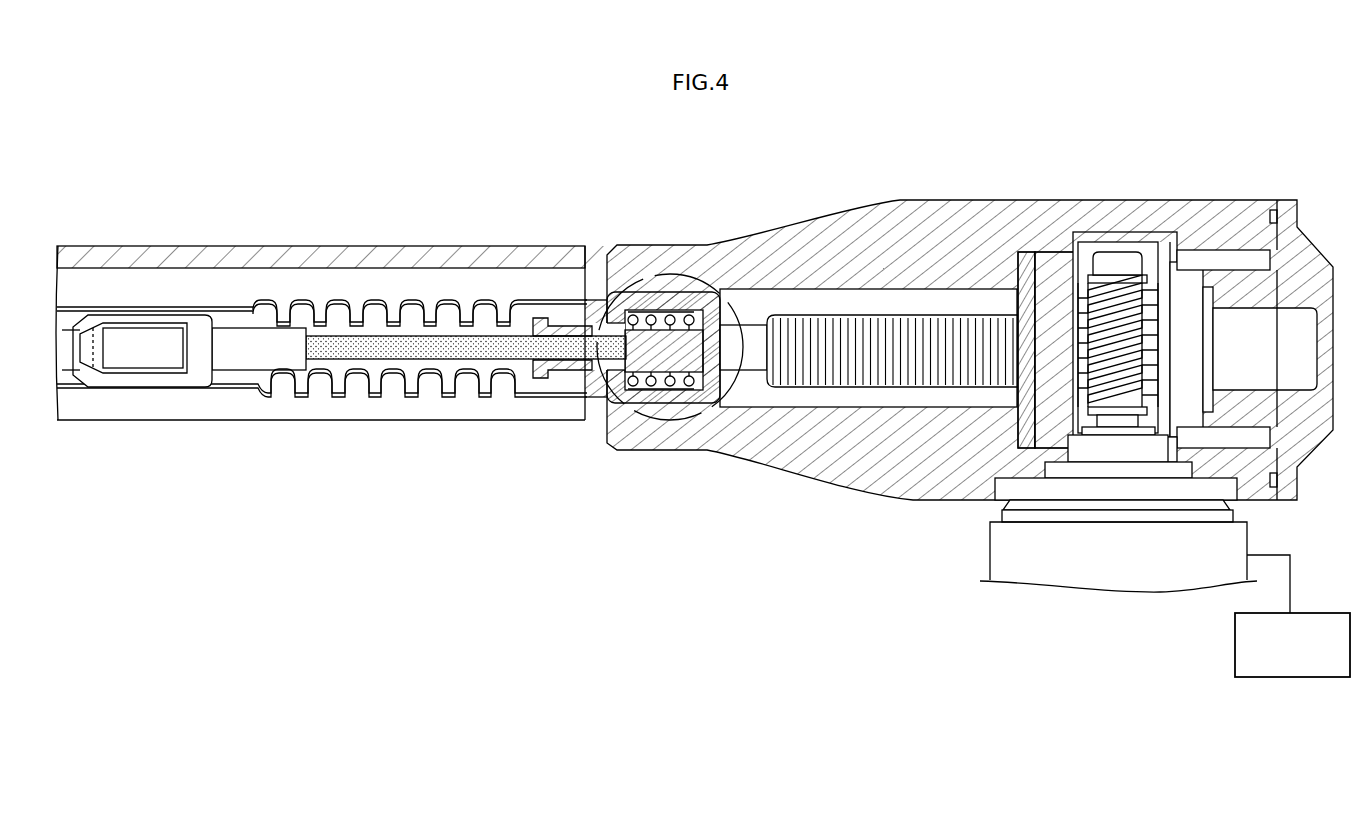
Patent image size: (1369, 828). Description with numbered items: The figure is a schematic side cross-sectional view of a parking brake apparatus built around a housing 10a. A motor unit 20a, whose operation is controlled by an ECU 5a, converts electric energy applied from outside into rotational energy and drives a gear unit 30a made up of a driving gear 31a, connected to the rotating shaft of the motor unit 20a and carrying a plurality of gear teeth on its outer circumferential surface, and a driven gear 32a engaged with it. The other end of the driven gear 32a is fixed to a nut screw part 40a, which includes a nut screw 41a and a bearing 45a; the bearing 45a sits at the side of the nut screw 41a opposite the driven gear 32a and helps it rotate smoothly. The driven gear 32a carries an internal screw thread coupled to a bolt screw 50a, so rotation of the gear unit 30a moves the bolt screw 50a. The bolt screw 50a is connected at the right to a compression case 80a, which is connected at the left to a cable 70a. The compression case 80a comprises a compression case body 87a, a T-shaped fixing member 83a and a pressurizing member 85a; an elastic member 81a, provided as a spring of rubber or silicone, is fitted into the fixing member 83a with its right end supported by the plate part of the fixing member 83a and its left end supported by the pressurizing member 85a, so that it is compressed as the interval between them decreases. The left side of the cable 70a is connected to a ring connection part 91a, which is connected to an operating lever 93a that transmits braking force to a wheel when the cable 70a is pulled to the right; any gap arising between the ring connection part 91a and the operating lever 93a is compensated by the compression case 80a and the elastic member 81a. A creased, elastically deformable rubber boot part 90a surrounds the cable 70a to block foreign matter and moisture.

The ECU 5a is at (1235, 645).
The housing 10a is at (818, 467).
The motor unit 20a is at (1105, 575).
The gear unit 30a is at (1138, 274).
The driving gear 31a is at (1117, 260).
The driven gear 32a is at (1153, 257).
The nut screw part 40a is at (1016, 279).
The nut screw 41a is at (1055, 250).
The bearing 45a is at (1023, 250).
The bolt screw 50a is at (888, 318).
The cable 70a is at (480, 354).
The compression case 80a is at (638, 334).
The elastic member 81a is at (657, 382).
The fixing member 83a is at (705, 397).
The pressurizing member 85a is at (613, 377).
The compression case body 87a is at (637, 298).
The boot part 90a is at (373, 393).
The ring connection part 91a is at (200, 373).
The operating lever 93a is at (137, 360).